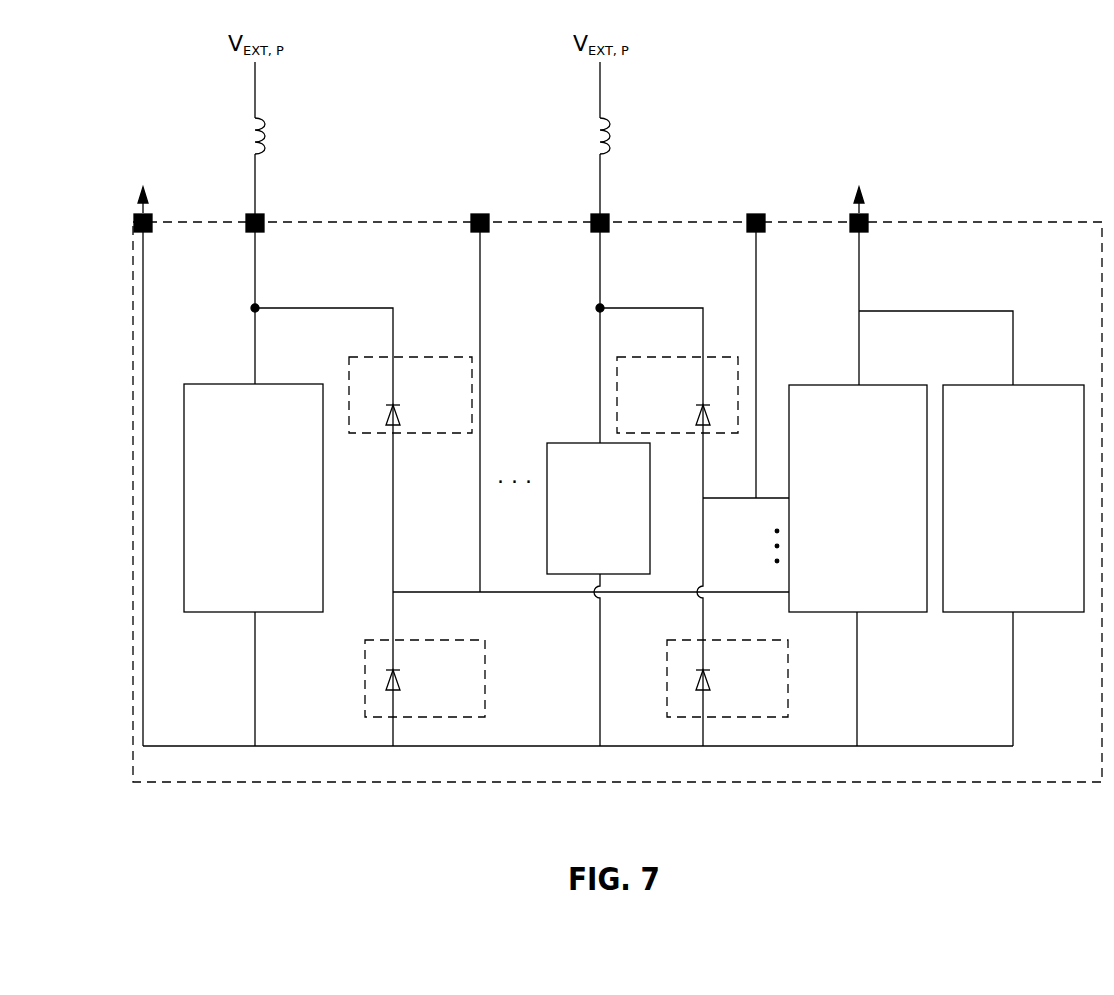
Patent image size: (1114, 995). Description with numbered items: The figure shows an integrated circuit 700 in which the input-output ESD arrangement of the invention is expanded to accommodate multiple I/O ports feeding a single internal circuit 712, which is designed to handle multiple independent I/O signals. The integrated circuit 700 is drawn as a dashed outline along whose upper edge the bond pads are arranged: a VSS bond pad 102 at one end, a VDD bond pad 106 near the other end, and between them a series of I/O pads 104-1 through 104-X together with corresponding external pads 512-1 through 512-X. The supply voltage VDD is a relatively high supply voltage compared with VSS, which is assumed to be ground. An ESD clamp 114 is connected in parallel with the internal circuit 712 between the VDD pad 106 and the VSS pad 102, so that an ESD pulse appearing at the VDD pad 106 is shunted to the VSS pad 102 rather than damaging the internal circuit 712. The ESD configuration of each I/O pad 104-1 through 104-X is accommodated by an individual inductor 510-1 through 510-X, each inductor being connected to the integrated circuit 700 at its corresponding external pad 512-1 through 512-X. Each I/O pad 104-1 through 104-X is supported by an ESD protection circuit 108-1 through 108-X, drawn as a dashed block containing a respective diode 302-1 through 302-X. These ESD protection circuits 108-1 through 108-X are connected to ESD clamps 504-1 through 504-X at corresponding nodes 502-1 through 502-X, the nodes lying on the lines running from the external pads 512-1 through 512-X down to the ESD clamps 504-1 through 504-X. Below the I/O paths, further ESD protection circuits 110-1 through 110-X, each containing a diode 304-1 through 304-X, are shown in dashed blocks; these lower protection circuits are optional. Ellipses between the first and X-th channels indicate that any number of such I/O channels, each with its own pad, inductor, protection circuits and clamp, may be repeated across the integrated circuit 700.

The VSS bond pad 102 is at (153, 218).
The I/O pad 104-X is at (489, 221).
The I/O pad 104-1 is at (765, 221).
The VDD bond pad 106 is at (868, 221).
The ESD protection circuit 108-X is at (435, 357).
The ESD protection circuit 108-1 is at (720, 357).
The ESD protection circuit 110-X is at (485, 667).
The ESD protection circuit 110-1 is at (788, 667).
The ESD clamp 114 is at (1066, 385).
The diode 302-X is at (424, 418).
The diode 302-1 is at (668, 418).
The diode 304-X is at (425, 684).
The diode 304-1 is at (739, 684).
The node 502-X is at (256, 306).
The node 502-1 is at (601, 306).
The ESD clamp 504-X is at (218, 612).
The ESD clamp 504-1 is at (566, 443).
The inductor 510-X is at (299, 136).
The inductor 510-1 is at (647, 136).
The external pad 512-X is at (264, 220).
The external pad 512-1 is at (609, 220).
The integrated circuit 700 is at (1017, 222).
The internal circuit 712 is at (896, 385).